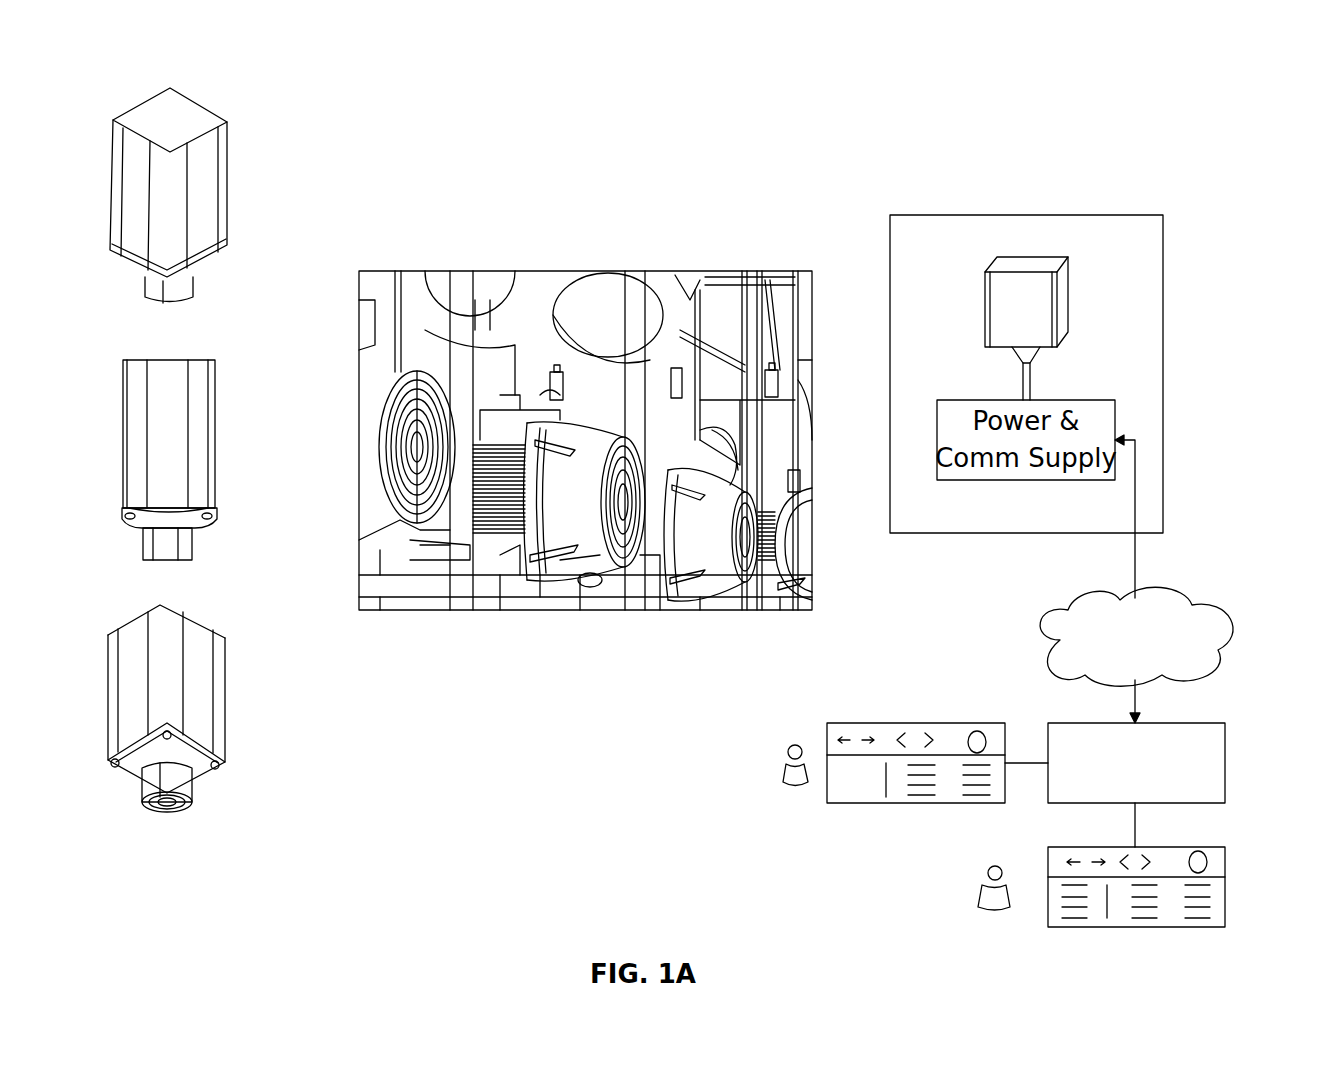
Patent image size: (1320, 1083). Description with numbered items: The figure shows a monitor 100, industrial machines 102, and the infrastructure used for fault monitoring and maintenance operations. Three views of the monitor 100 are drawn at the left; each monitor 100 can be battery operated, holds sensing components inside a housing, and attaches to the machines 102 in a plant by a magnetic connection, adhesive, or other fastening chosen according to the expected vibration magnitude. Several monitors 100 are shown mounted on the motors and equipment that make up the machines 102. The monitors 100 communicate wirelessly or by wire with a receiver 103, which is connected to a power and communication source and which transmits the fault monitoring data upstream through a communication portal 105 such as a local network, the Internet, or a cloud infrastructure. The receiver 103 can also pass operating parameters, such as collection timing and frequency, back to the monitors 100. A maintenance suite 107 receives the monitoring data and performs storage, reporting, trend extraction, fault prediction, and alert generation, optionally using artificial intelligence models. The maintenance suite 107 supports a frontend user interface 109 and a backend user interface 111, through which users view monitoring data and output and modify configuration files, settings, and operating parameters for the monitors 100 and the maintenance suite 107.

The monitor 100 is at (233, 102).
The industrial machines 102 is at (418, 535).
The receiver 103 is at (1070, 254).
The communication portal 105 is at (1190, 604).
The maintenance suite 107 is at (1158, 722).
The frontend user interface 109 is at (898, 722).
The backend user interface 111 is at (1156, 846).